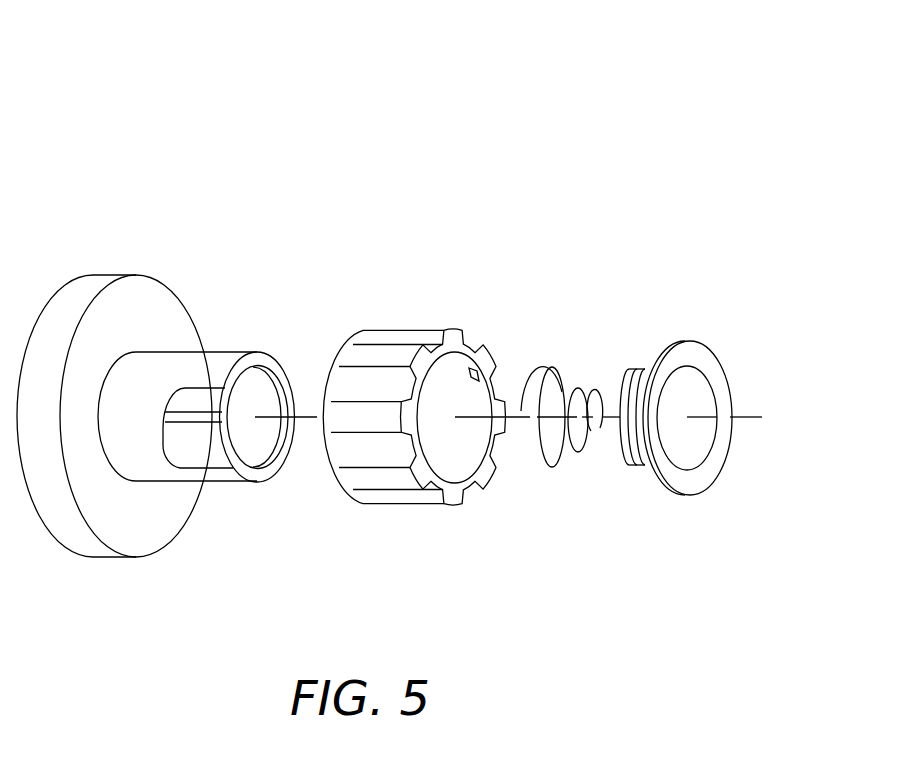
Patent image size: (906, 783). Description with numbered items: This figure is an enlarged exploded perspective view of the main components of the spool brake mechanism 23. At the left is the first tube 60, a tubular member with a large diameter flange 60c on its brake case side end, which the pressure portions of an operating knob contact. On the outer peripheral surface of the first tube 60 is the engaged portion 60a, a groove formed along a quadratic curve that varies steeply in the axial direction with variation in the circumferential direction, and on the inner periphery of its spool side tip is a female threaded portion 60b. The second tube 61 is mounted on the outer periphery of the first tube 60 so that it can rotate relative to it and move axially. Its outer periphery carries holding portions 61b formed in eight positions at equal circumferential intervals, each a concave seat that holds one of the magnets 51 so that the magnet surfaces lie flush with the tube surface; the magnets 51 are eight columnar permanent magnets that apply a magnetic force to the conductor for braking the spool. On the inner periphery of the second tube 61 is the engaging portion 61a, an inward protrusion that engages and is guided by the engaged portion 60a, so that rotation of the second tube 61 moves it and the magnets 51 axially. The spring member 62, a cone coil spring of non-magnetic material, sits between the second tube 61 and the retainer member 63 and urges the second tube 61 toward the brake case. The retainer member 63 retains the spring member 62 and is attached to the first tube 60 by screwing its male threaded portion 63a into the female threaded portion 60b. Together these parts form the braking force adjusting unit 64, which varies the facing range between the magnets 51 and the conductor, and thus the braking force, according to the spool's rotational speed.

The spool brake mechanism 23 is at (327, 185).
The magnets 51 is at (418, 335).
The first tube 60 is at (185, 335).
The engaged portion 60a is at (198, 458).
The female threaded portion 60b is at (276, 380).
The flange 60c is at (80, 300).
The second tube 61 is at (383, 310).
The engaging portion 61a is at (474, 382).
The holding portions 61b is at (477, 343).
The spring member 62 is at (565, 370).
The retainer member 63 is at (682, 333).
The male threaded portion 63a is at (640, 467).
The braking force adjusting unit 64 is at (283, 522).